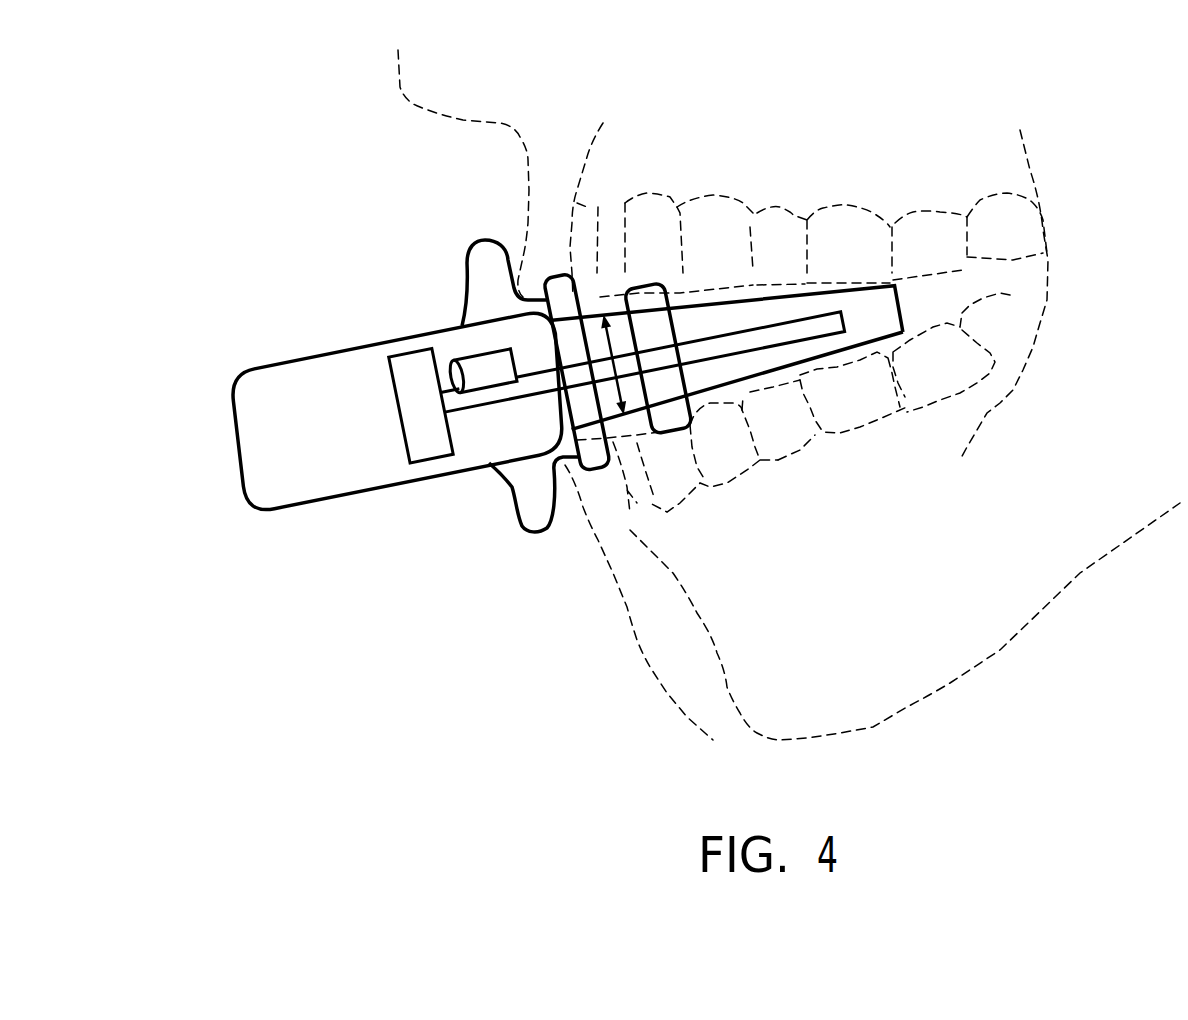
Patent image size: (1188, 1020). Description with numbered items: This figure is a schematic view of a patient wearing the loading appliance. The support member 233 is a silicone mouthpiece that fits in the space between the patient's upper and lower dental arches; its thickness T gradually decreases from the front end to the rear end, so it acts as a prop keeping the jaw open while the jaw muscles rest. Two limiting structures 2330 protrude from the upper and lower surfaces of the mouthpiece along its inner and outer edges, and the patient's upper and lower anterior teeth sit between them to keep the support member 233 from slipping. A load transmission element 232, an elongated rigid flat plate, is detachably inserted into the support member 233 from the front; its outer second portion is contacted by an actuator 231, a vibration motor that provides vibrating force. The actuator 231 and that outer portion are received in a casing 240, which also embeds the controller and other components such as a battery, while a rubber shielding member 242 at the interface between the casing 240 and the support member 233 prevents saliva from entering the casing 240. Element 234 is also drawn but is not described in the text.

The casing 240 is at (232, 445).
The shielding member 242 is at (487, 258).
The circuit module 234 is at (427, 430).
The actuator 231 is at (485, 370).
The load transmission element 232 is at (810, 327).
The support member 233 is at (753, 374).
The limiting structure 2330 is at (662, 385).
The thickness T is at (598, 405).